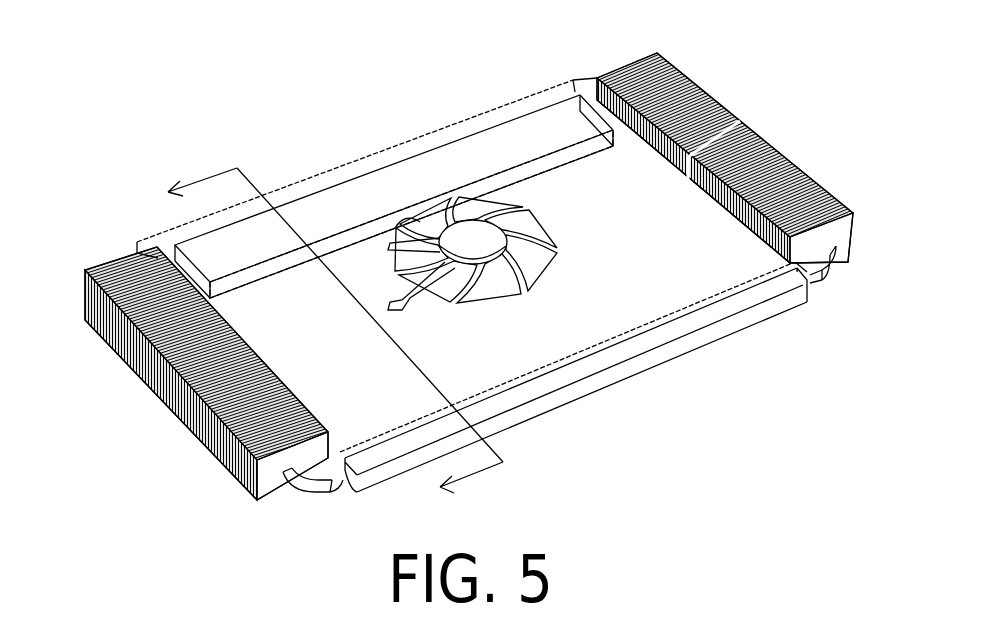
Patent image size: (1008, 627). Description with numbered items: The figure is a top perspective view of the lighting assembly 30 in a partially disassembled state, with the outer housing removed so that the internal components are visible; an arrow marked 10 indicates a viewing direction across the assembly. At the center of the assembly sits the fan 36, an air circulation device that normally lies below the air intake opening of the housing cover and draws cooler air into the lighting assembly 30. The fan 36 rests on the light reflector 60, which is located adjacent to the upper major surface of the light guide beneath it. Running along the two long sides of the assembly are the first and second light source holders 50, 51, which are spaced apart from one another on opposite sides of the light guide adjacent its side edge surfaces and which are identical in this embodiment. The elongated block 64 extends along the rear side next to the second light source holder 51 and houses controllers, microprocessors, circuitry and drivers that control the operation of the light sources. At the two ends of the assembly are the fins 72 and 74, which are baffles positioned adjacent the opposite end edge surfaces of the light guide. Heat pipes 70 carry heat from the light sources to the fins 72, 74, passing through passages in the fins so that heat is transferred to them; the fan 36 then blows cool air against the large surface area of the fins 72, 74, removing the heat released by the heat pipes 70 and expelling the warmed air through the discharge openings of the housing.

The direction of view 10 is at (316, 338).
The lighting assembly 30 is at (141, 127).
The fan 36 is at (540, 238).
The first light source holder 50 is at (600, 380).
The second light source holder 51 is at (343, 170).
The light reflector 60 is at (680, 302).
The block 64 is at (518, 138).
The heat pipe 70 is at (308, 490).
The fins 72 is at (143, 353).
The fins 74 is at (727, 112).